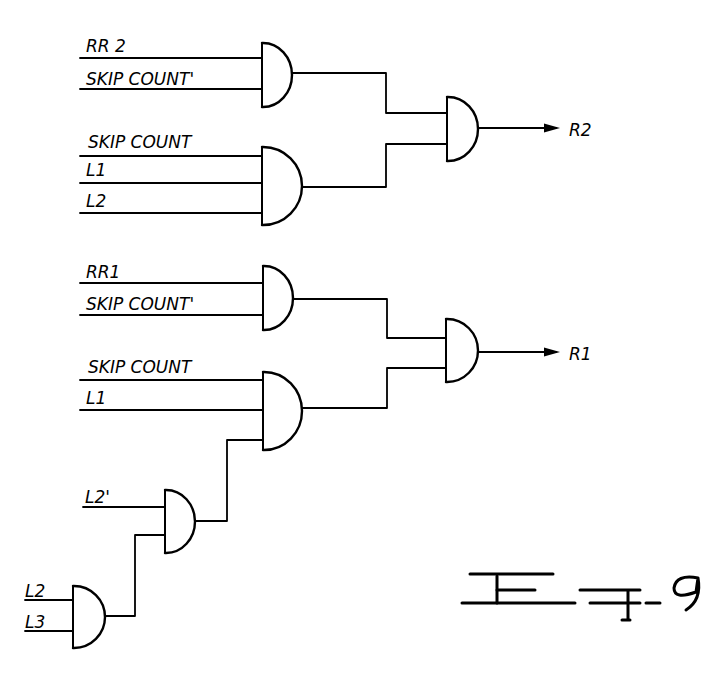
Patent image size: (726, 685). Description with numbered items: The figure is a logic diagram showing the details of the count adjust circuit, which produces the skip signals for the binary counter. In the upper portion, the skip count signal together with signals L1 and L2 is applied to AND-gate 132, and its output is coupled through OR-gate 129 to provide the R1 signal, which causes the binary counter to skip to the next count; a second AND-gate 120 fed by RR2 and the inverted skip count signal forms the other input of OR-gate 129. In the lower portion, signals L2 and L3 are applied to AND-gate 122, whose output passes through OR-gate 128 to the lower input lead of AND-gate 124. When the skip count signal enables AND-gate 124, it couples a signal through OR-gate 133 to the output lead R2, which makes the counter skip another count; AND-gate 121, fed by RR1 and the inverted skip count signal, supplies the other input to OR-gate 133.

The AND gate 120 is at (293, 56).
The AND-gate 132 is at (296, 163).
The OR-gate 129 is at (465, 158).
The AND gate 121 is at (292, 279).
The AND-gate 124 is at (298, 394).
The OR-gate 133 is at (460, 385).
The OR-gate 128 is at (192, 543).
The AND-gate 122 is at (100, 640).